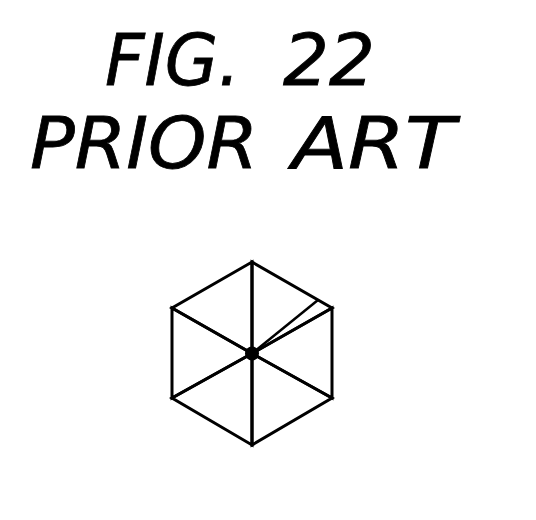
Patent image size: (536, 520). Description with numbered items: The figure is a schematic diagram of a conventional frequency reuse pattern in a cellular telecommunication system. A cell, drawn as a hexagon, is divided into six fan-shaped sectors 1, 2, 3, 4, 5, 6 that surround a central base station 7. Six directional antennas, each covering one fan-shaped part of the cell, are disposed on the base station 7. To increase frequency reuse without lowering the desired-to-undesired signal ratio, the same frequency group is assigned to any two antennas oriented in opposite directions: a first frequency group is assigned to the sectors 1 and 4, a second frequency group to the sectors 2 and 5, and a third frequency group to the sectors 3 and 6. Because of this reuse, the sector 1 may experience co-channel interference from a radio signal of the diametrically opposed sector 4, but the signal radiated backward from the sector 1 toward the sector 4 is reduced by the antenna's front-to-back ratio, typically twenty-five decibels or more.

The sector 1 is at (230, 278).
The sector 2 is at (277, 278).
The sector 3 is at (333, 360).
The sector 4 is at (273, 428).
The sector 5 is at (230, 430).
The sector 6 is at (175, 357).
The base station 7 is at (320, 300).